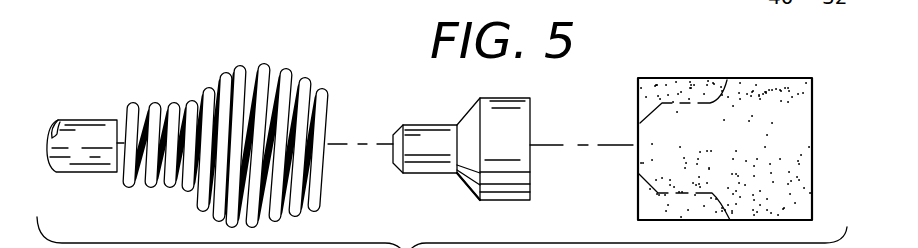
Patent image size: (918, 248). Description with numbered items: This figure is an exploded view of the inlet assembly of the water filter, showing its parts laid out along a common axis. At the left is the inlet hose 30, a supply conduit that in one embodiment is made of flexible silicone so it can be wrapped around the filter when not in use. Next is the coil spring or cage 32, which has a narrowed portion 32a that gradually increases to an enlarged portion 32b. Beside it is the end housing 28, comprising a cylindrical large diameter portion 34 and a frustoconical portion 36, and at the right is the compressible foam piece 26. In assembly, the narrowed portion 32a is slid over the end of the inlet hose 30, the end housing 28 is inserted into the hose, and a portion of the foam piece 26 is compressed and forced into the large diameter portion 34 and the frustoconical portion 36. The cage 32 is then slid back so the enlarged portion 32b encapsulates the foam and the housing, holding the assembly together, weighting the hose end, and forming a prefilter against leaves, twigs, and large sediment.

The foam piece 26 is at (700, 82).
The end housing 28 is at (530, 192).
The inlet hose 30 is at (94, 140).
The coil spring or cage 32 is at (287, 72).
The narrowed portion 32a is at (174, 88).
The enlarged portion 32b is at (275, 60).
The cylindrical large diameter portion 34 is at (519, 122).
The frustoconical portion 36 is at (462, 178).